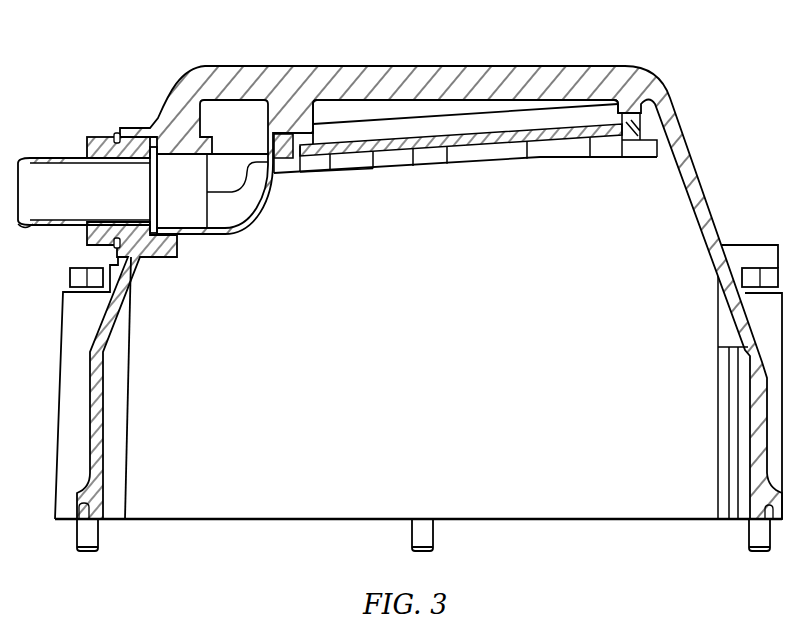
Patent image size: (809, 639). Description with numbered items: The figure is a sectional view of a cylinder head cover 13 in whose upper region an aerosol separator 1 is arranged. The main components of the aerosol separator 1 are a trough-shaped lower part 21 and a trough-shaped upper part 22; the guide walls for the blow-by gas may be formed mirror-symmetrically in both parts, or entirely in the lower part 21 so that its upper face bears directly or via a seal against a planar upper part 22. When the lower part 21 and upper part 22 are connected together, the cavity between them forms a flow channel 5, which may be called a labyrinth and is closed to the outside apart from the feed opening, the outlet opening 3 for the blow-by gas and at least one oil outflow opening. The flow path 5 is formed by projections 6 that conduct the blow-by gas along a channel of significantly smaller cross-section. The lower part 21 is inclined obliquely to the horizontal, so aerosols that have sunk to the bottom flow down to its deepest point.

The aerosol separator 1 is at (584, 180).
The outlet opening 3 is at (88, 187).
The flow channel 5 is at (478, 128).
The projections 6 is at (393, 130).
The cylinder head cover 13 is at (497, 92).
The lower part 21 is at (335, 163).
The upper part 22 is at (338, 108).